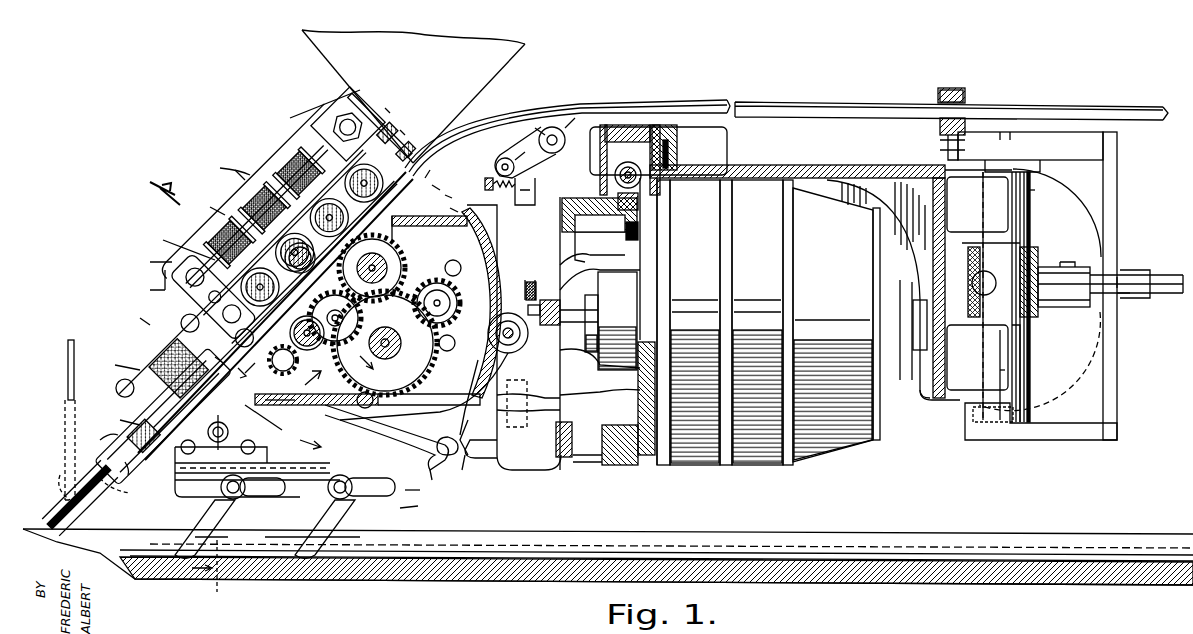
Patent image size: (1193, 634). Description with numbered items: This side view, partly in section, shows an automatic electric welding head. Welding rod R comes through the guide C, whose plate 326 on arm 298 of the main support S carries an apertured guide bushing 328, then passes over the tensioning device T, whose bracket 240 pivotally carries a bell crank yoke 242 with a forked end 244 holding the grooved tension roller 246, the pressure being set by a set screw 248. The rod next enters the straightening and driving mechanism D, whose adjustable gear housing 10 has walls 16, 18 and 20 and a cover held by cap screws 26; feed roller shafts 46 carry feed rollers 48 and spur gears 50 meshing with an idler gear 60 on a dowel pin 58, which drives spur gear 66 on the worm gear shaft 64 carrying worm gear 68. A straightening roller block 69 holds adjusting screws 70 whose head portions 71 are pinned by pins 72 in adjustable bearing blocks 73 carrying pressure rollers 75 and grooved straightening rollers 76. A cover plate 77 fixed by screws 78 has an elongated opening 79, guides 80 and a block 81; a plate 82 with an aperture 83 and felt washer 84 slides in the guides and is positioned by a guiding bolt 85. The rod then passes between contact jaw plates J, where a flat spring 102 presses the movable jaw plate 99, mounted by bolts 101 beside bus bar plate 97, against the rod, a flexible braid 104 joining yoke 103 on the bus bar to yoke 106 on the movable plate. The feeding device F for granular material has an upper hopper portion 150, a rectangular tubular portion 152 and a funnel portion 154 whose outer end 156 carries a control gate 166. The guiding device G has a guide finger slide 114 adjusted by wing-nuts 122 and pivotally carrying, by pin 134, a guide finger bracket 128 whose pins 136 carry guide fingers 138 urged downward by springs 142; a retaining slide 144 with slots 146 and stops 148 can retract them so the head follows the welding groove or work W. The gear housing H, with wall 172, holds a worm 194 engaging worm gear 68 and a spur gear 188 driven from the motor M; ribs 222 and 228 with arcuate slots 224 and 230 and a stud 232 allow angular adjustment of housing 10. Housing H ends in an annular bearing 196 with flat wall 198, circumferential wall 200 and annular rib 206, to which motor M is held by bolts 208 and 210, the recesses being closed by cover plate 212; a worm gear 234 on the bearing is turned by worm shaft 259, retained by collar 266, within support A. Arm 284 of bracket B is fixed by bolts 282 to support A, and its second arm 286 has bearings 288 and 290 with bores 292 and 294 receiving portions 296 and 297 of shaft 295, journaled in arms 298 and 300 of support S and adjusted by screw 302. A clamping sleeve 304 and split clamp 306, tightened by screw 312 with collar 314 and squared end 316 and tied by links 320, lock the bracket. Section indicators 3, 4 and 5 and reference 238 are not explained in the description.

The welding groove or work W is at (345, 565).
The section line 4 is at (216, 470).
The upper portion 150 is at (356, 58).
The plate 82 is at (485, 113).
The rod tensioning device T is at (556, 126).
The forked end 244 is at (545, 127).
The grooved tension roller 246 is at (570, 128).
The bell crank yoke 242 is at (512, 160).
The set screw 248 is at (492, 192).
The bracket 240 is at (536, 195).
The annular bearing 196 is at (575, 195).
The housing part 238 is at (592, 248).
The circumferential wall 200 is at (616, 268).
The support A is at (628, 124).
The bolts 282 is at (670, 140).
The worm shaft 259 is at (672, 152).
The collar 266 is at (645, 185).
The worm gear 234 is at (640, 207).
The annular rib 206 is at (640, 232).
The driving motor M is at (745, 460).
The arm 284 is at (762, 180).
The bracket B is at (836, 190).
The second arm 286 is at (918, 248).
The guide C is at (965, 88).
The plate 326 is at (940, 90).
The guide bushing 328 is at (940, 125).
The adjusting screw 302 is at (1010, 132).
The welding rod R is at (1085, 103).
The arm 298 is at (1090, 140).
The arm 300 is at (1050, 440).
The bearing 288 is at (1030, 186).
The bore 292 is at (1030, 202).
The shaft portion 296 is at (990, 208).
The shaft 295 is at (1005, 340).
The split clamp 306 is at (1038, 250).
The collar 314 is at (1035, 322).
The links 320 is at (1060, 266).
The squared end 316 is at (1165, 275).
The main support S is at (1123, 274).
The screw 312 is at (1122, 293).
The clamping sleeve 304 is at (1030, 332).
The bearing 290 is at (1030, 360).
The shaft portion 297 is at (1030, 378).
The bore 294 is at (1085, 380).
The stud 232 is at (550, 330).
The spur gear 188 is at (528, 380).
The bolts 208 is at (562, 395).
The bolts 210 is at (570, 420).
The cover plate 212 is at (578, 462).
The flat wall 198 is at (548, 452).
The gear housing H is at (455, 428).
The rib 228 is at (467, 437).
The arcuate slot 230 is at (475, 400).
The wall 172 is at (480, 460).
The worm 194 is at (435, 412).
The spur gear 66 is at (455, 312).
The wall 18 is at (478, 222).
The worm gear 68 is at (440, 219).
The feed roller shaft 46 is at (362, 291).
The dowel pin 58 is at (372, 340).
The section line 5 is at (432, 195).
The worm gear shaft 64 is at (437, 290).
The spur gear 50 is at (335, 318).
The welding rod feed roller 48 is at (345, 283).
The straightening roller 76 is at (396, 195).
The wall 20 is at (283, 360).
The wall 16 is at (339, 253).
The idler gear 60 is at (362, 392).
The section line 3 is at (237, 283).
The adjustable gear housing 10 is at (319, 443).
The rib 222 is at (395, 454).
The straightening and driving mechanism D is at (182, 306).
The pressure roller 75 is at (345, 185).
The flexible braid 104 is at (150, 345).
The head portion 71 is at (265, 200).
The adjusting screw 70 is at (250, 154).
The straightening roller block 69 is at (232, 160).
The pin 72 is at (177, 243).
The rectangular tubular portion 152 is at (225, 166).
The guiding bolt 85 is at (360, 100).
The block 81 is at (392, 112).
The guides 80 is at (404, 132).
The elongated opening 79 is at (348, 124).
The welding material feeding mechanism F is at (281, 134).
The aperture 83 is at (432, 168).
The washer 84 is at (443, 182).
The cover plate 77 is at (458, 194).
The screws 78 is at (466, 209).
The flat spring 102 is at (163, 416).
The contact jaw plates J is at (86, 498).
The control gate 166 is at (68, 356).
The funnel portion 154 is at (70, 380).
The outer end 156 is at (65, 475).
The bolts 101 is at (125, 418).
The bus bar plate 97 is at (100, 440).
The movable jaw plate 99 is at (130, 480).
The yoke 106 is at (115, 365).
The yoke 103 is at (142, 318).
The adjustable bearing block 73 is at (152, 282).
The cap screws 26 is at (224, 353).
The wing-nuts 122 is at (263, 407).
The guide finger slide 114 is at (286, 409).
The pin 134 is at (252, 459).
The springs 142 is at (200, 470).
The guide finger bracket 128 is at (174, 500).
The pins 136 is at (222, 485).
The slots 146 is at (283, 497).
The stops 148 is at (265, 500).
The guide finger 138 is at (277, 537).
The guide finger retaining slide 144 is at (395, 500).
The guiding device G is at (410, 515).
The arcuate slot 224 is at (438, 479).